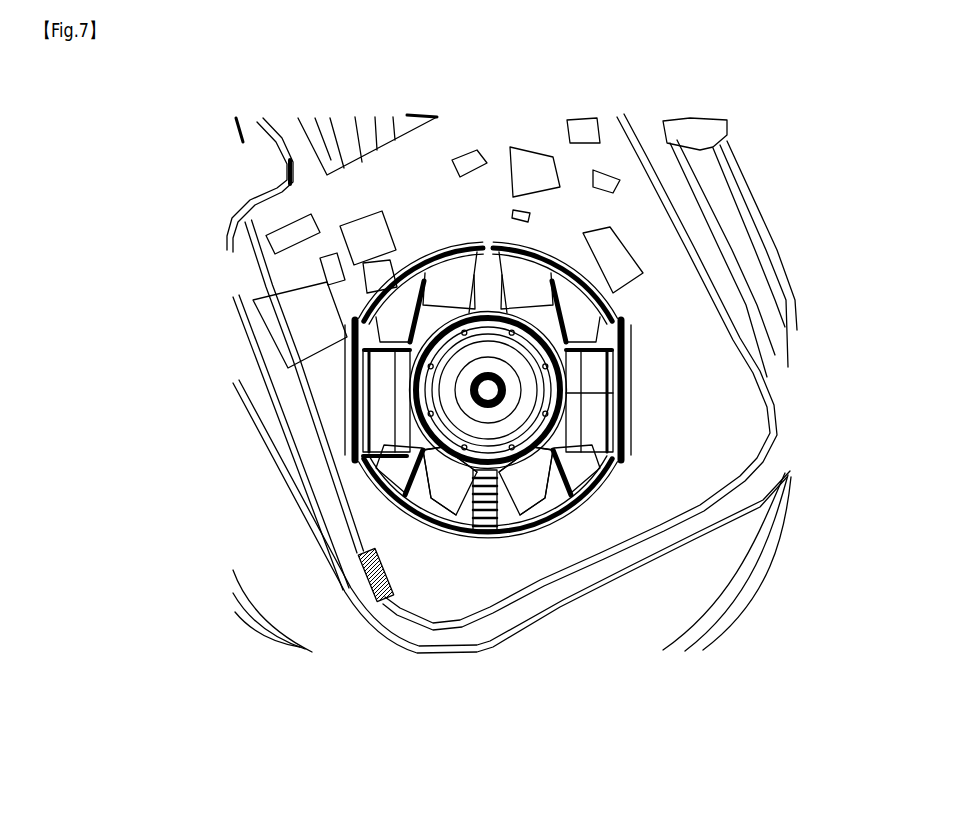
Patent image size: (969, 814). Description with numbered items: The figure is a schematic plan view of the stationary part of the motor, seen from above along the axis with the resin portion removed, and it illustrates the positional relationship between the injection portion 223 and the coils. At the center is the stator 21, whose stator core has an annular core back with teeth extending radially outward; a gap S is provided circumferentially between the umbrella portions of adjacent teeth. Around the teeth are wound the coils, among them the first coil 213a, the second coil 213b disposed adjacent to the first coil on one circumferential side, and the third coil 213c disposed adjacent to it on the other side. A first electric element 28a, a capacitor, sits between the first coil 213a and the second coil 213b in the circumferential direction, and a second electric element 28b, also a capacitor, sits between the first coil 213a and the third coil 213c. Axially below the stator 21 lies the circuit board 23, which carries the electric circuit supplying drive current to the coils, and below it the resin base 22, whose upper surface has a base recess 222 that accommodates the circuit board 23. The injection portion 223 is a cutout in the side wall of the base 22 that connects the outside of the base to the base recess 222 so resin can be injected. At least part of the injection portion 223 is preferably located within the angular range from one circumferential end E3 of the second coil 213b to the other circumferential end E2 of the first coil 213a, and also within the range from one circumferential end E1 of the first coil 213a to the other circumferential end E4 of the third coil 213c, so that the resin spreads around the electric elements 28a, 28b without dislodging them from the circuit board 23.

The stator 21 is at (459, 228).
The first coil 213a is at (443, 487).
The second coil 213b is at (360, 380).
The third coil 213c is at (543, 490).
The first electric element 28a is at (407, 447).
The second electric element 28b is at (487, 540).
The base 22 is at (737, 547).
The base recess 222 is at (768, 387).
The injection portion 223 is at (345, 590).
The circuit board 23 is at (680, 323).
The gap S is at (787, 470).
The one circumferential end of the first coil E1 is at (345, 500).
The other circumferential end of the first coil E2 is at (463, 548).
The one circumferential end of the second coil E3 is at (347, 323).
The other circumferential end of the third coil E4 is at (607, 490).